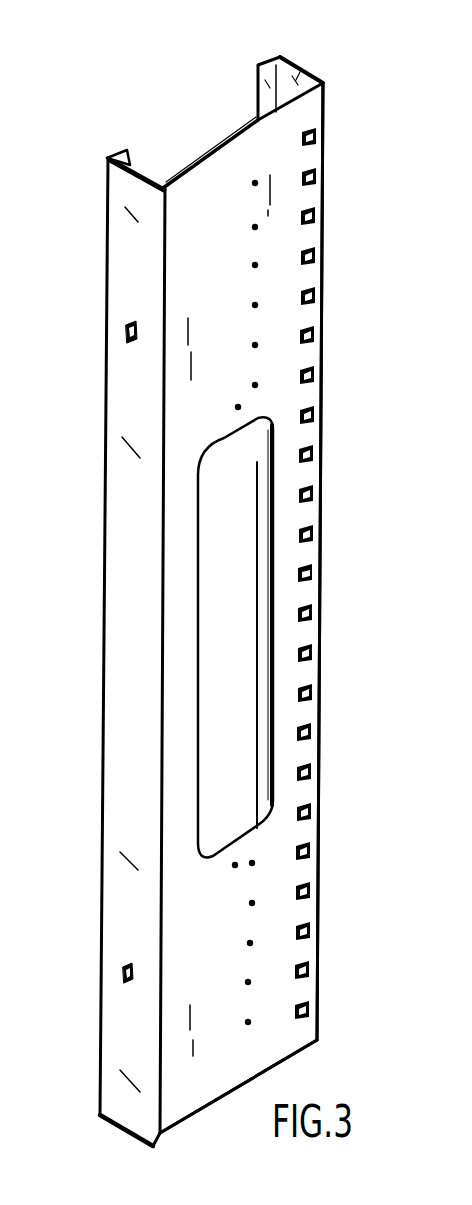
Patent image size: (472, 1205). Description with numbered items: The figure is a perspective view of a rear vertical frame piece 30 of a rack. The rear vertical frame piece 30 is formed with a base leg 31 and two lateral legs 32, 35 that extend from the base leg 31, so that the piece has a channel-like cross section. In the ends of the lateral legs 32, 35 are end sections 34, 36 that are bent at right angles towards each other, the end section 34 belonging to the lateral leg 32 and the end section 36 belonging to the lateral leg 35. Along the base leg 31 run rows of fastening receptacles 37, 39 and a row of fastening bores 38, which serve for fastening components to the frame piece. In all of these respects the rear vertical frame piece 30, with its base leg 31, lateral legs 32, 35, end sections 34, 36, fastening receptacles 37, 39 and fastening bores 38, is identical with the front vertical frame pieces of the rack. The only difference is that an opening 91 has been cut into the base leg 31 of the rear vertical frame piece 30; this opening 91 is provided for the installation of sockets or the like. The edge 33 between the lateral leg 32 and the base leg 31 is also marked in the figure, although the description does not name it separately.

The rear vertical frame piece 30 is at (330, 523).
The base leg 31 is at (216, 163).
The lateral leg 32 is at (118, 266).
The fold edge 33 is at (165, 418).
The end section 34 is at (112, 150).
The lateral leg 35 is at (300, 70).
The end section 36 is at (265, 65).
The row of fastening receptacles 37 is at (313, 372).
The row of fastening bores 38 is at (255, 264).
The row of fastening receptacles 39 is at (323, 770).
The opening 91 is at (264, 620).